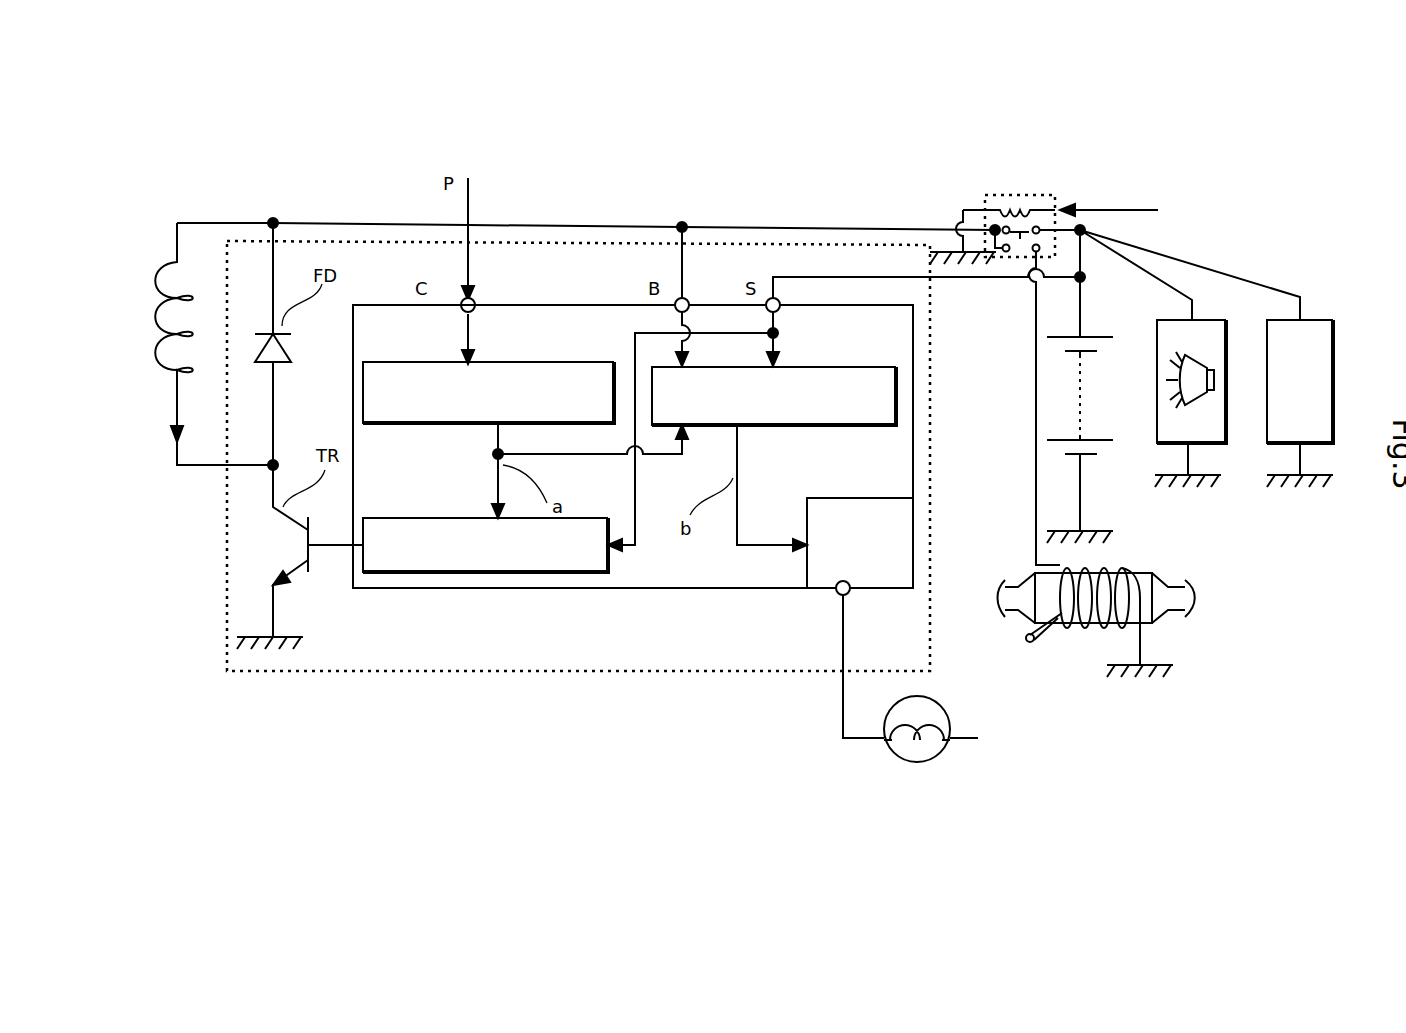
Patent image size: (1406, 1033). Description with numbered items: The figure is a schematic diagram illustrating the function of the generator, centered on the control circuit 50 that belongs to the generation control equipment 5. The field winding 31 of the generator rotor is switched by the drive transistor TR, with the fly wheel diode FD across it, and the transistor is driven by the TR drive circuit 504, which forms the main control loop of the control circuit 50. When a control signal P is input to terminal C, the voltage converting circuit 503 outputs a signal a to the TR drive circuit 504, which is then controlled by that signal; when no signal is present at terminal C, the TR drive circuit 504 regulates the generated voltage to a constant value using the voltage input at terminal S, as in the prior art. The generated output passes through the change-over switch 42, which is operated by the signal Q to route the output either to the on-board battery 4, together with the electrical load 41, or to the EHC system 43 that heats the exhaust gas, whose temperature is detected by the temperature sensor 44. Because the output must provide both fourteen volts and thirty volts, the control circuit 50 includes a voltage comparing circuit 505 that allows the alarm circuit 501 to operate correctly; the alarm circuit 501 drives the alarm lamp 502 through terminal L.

The on-board battery 4 is at (1083, 470).
The generation control equipment 5 is at (574, 675).
The field winding 31 is at (163, 390).
The electrical load 41 is at (1267, 335).
The change-over switch 42 is at (968, 208).
The EHC system 43 is at (1168, 620).
The temperature sensor 44 is at (1032, 645).
The control circuit 50 is at (578, 592).
The alarm circuit 501 is at (850, 596).
The alarm lamp 502 is at (942, 755).
The voltage converting circuit 503 is at (492, 425).
The TR drive circuit 504 is at (497, 575).
The voltage comparing circuit 505 is at (820, 427).